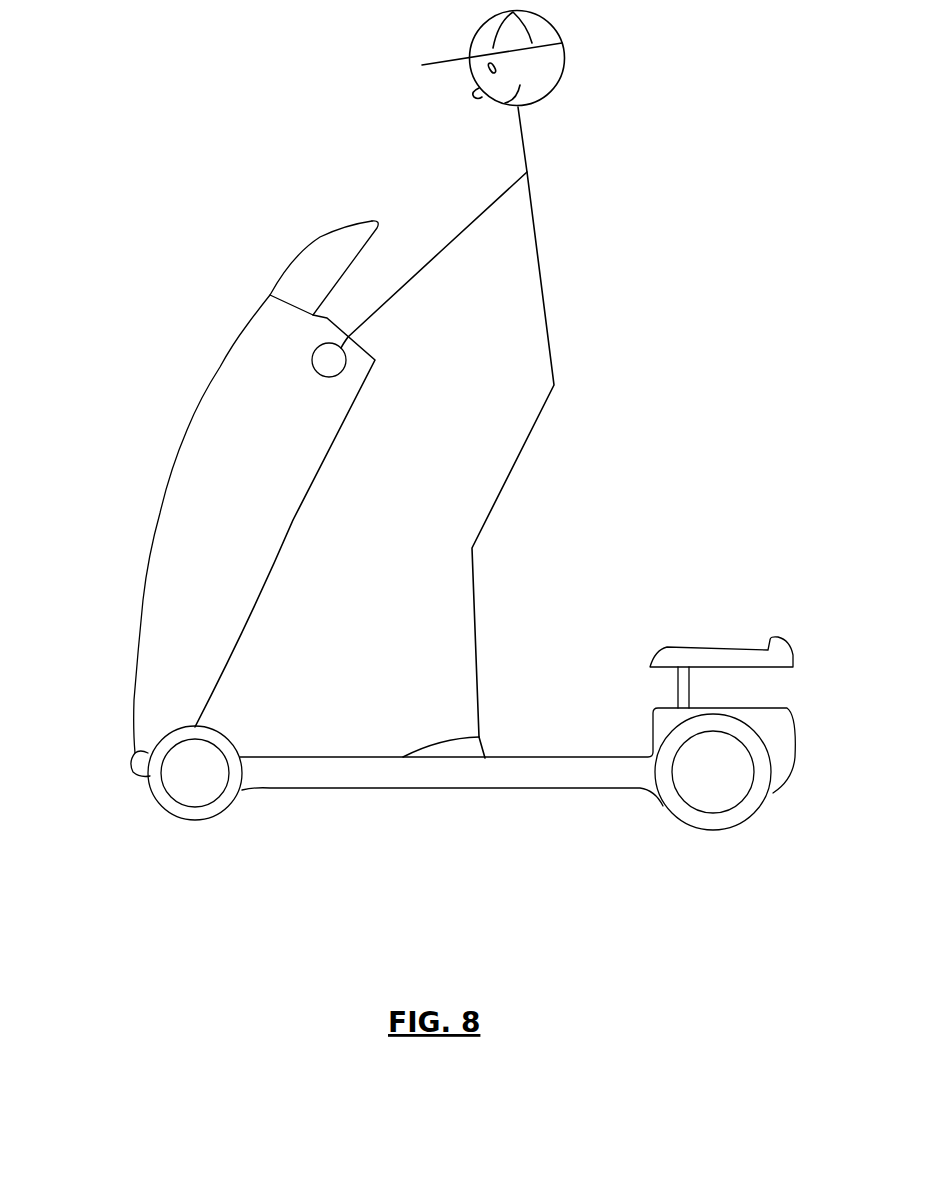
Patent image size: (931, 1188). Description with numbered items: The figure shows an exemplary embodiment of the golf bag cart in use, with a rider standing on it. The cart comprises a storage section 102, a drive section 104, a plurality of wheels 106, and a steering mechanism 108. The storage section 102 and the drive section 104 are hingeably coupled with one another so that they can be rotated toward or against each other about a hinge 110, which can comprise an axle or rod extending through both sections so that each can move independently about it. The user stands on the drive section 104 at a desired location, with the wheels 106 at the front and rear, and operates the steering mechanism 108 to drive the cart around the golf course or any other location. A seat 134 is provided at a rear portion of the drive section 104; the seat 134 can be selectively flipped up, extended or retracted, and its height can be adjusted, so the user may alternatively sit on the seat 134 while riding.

The storage section 102 is at (174, 527).
The drive section 104 is at (495, 780).
The wheels 106 is at (190, 787).
The steering mechanism 108 is at (322, 357).
The hinge 110 is at (150, 774).
The seat 134 is at (717, 660).